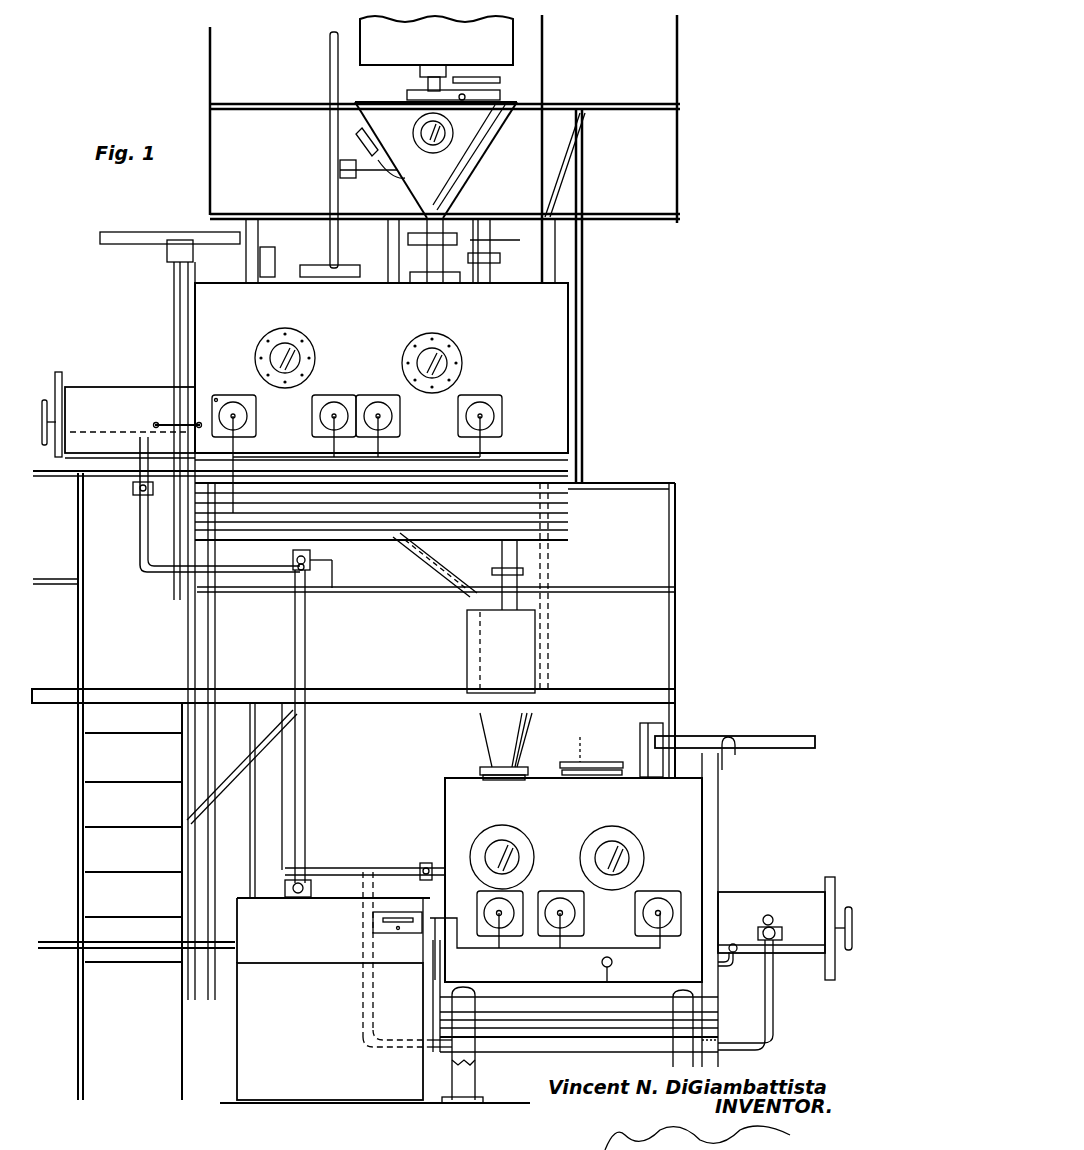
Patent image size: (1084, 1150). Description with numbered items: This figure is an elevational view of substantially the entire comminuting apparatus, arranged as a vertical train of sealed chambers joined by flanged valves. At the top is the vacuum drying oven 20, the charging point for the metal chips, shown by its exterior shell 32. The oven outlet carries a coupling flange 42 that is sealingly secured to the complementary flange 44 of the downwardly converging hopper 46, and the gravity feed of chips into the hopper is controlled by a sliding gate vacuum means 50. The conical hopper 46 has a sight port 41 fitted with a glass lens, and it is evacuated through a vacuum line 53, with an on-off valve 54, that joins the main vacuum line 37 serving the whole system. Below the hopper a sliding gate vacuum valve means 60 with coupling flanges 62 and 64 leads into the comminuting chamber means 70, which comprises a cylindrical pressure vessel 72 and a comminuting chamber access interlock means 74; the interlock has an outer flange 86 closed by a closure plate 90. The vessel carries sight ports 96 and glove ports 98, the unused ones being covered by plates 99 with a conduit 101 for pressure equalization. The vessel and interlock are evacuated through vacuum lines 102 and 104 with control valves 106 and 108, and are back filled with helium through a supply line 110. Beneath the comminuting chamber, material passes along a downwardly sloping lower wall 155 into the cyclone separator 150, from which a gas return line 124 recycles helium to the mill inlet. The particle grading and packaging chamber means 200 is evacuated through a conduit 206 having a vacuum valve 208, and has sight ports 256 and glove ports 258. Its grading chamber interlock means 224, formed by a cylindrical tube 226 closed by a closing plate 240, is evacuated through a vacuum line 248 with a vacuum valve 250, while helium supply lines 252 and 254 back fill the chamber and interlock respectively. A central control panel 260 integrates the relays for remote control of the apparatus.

The vacuum drying oven 20 is at (332, 17).
The exterior shell 32 is at (466, 49).
The main vacuum line 37 is at (330, 58).
The complementary flange 44 is at (408, 92).
The vacuum means 50 is at (500, 80).
The coupling flange 42 is at (465, 97).
The sight port 41 is at (453, 133).
The on-off valve 54 is at (340, 155).
The vacuum line 53 is at (388, 175).
The downwardly converging hopper 46 is at (472, 186).
The sight ports 96 is at (308, 266).
The coupling flange 62 is at (408, 238).
The sliding gate type vacuum valve means 60 is at (500, 258).
The coupling flange 64 is at (410, 280).
The pressure vessel 72 is at (520, 331).
The comminuting chamber means 70 is at (558, 368).
The outer flange 86 is at (62, 380).
The comminuting chamber access interlock means 74 is at (131, 387).
The plates 99 is at (217, 397).
The glove ports 98 is at (378, 400).
The closure plate 90 is at (60, 402).
The helium supply line 110 is at (158, 428).
The conduit 101 is at (240, 455).
The control valve 108 is at (133, 488).
The vacuum line 104 is at (140, 528).
The vacuum line 102 is at (293, 552).
The gas return line 124 is at (520, 568).
The control valve 106 is at (292, 572).
The downwardly sloping lower wall 155 is at (425, 570).
The cyclone separator 150 is at (462, 658).
The sight ports 256 is at (612, 842).
The particle grading and packaging chamber means 200 is at (447, 805).
The vacuum valve 208 is at (426, 860).
The conduit 206 is at (376, 868).
The glove ports 258 is at (548, 895).
The grading chamber interlock means 224 is at (730, 890).
The cylindrical tube 226 is at (780, 892).
The closing plate 240 is at (830, 878).
The vacuum valve 250 is at (758, 932).
The supply line 252 is at (602, 964).
The supply line 254 is at (745, 960).
The vacuum line 248 is at (775, 1008).
The central control panel 260 is at (346, 970).